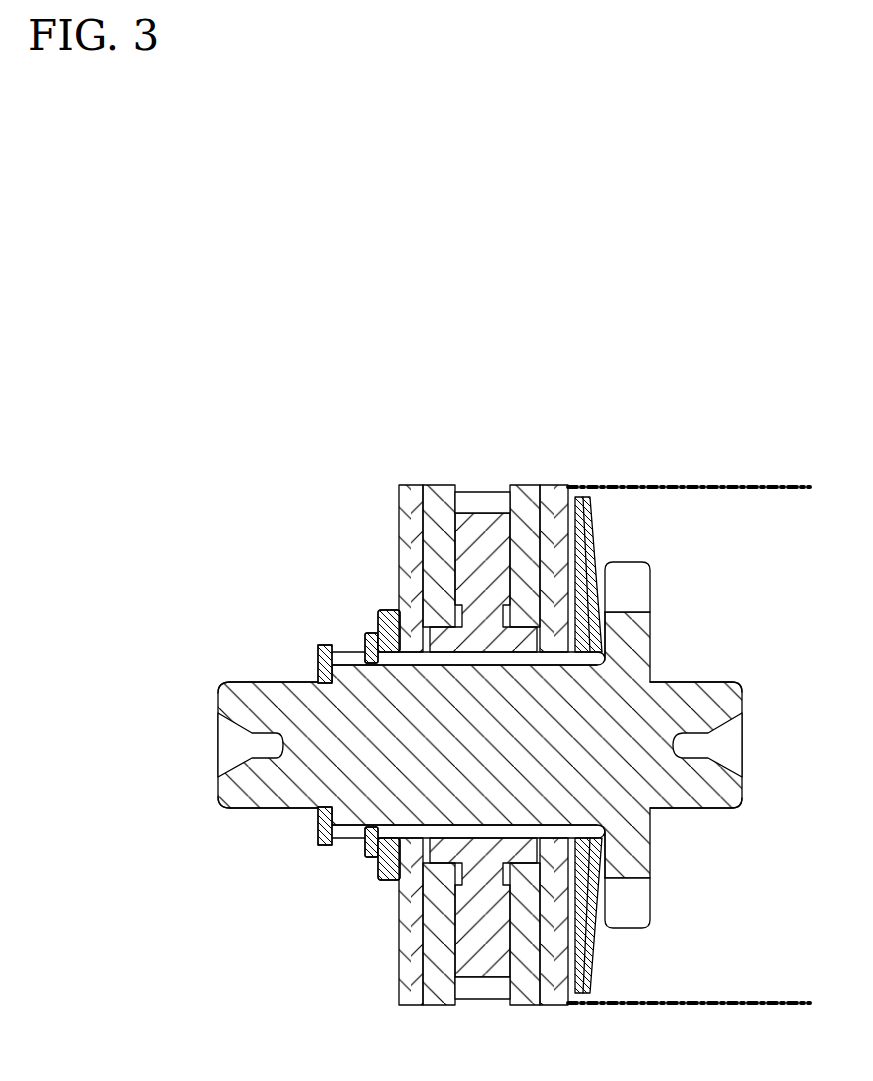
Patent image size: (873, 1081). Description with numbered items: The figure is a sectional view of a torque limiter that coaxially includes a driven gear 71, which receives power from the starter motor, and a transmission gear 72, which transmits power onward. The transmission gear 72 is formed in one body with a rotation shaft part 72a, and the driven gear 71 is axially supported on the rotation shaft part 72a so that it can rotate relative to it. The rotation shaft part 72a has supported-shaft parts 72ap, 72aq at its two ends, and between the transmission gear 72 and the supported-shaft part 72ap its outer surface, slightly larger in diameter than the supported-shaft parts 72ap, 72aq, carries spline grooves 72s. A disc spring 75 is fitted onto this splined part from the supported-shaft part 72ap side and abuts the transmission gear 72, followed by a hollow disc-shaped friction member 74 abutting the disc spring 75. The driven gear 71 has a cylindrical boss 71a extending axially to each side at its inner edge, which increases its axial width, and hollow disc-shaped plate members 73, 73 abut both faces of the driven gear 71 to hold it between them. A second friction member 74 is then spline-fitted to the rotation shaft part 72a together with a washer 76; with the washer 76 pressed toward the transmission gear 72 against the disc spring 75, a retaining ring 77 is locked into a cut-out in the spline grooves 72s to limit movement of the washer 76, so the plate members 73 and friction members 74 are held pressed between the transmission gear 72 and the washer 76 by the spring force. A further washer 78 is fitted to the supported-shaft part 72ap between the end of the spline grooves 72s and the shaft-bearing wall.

The driven gear 71 is at (496, 722).
The cylindrical boss 71a is at (517, 852).
The transmission gear 72 is at (478, 797).
The rotation shaft part 72a is at (466, 752).
The supported-shaft part 72ap is at (270, 812).
The supported-shaft part 72aq is at (685, 812).
The spline grooves 72s is at (402, 877).
The plate member 73 is at (436, 485).
The friction member 74 is at (409, 485).
The disc spring 75 is at (600, 514).
The washer 76 is at (390, 608).
The retaining ring 77 is at (368, 632).
The washer 78 is at (320, 643).